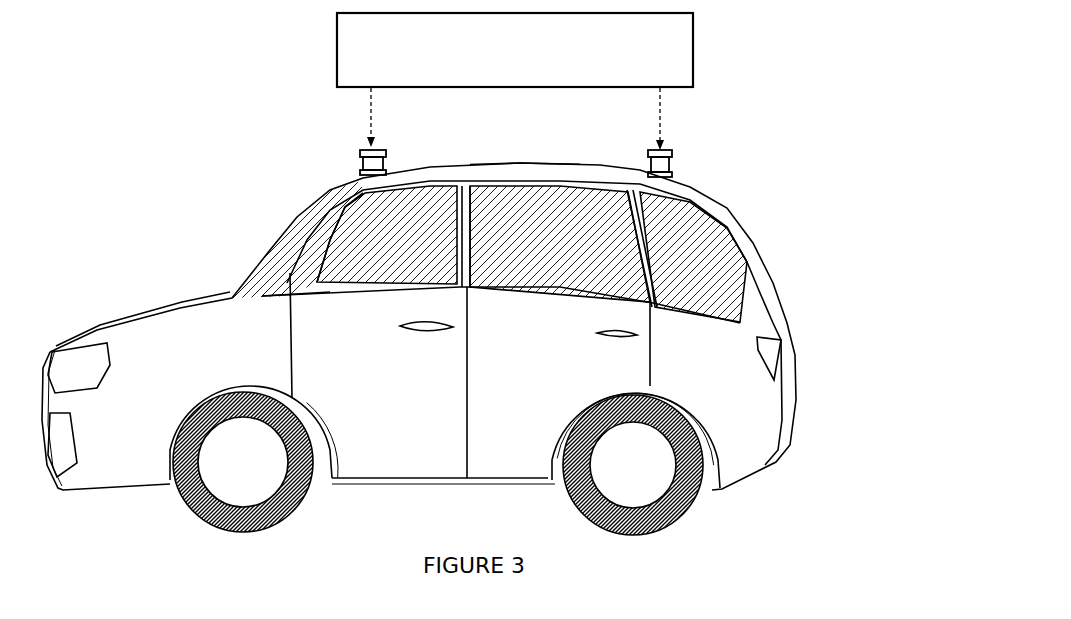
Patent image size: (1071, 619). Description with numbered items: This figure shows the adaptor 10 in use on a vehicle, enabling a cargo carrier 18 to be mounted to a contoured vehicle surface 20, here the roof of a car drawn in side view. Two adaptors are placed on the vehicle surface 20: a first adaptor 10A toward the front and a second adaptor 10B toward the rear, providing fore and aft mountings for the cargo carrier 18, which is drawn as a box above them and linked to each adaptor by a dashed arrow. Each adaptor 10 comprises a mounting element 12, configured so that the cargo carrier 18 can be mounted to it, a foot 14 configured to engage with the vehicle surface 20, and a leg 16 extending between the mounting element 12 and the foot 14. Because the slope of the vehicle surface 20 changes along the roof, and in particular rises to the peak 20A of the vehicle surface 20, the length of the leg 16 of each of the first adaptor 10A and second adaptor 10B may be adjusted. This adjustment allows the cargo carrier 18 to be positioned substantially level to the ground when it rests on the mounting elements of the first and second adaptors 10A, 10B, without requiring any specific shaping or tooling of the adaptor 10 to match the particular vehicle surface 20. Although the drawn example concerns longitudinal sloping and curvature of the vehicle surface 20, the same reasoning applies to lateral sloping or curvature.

The adaptor 10 is at (495, 201).
The first adaptor 10A is at (233, 201).
The second adaptor 10B is at (688, 163).
The mounting element 12 is at (360, 153).
The leg 16 is at (360, 164).
The foot 14 is at (360, 175).
The cargo carrier 18 is at (370, 47).
The vehicle surface 20 is at (434, 180).
The peak of the vehicle surface 20A is at (520, 165).